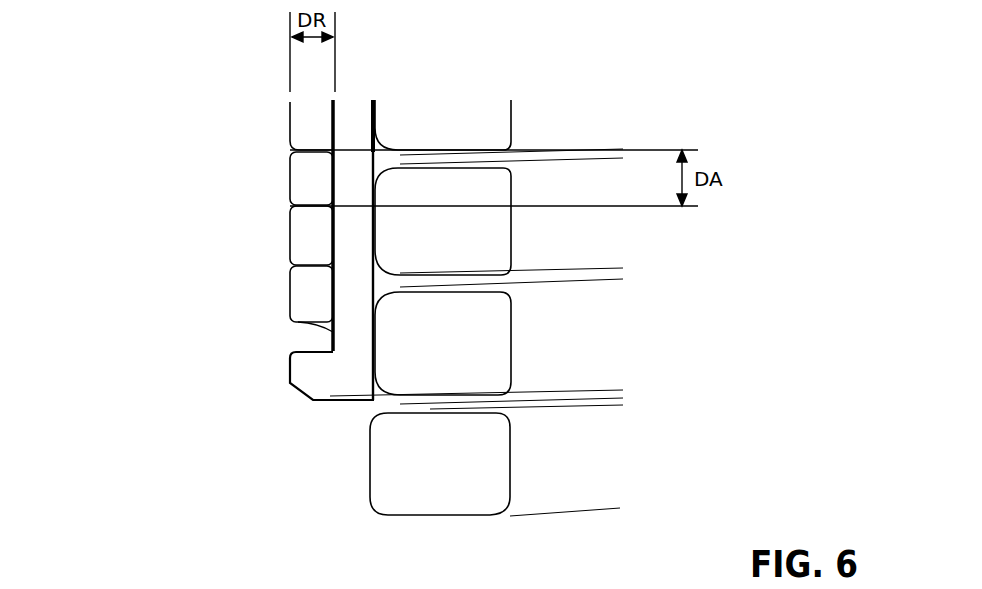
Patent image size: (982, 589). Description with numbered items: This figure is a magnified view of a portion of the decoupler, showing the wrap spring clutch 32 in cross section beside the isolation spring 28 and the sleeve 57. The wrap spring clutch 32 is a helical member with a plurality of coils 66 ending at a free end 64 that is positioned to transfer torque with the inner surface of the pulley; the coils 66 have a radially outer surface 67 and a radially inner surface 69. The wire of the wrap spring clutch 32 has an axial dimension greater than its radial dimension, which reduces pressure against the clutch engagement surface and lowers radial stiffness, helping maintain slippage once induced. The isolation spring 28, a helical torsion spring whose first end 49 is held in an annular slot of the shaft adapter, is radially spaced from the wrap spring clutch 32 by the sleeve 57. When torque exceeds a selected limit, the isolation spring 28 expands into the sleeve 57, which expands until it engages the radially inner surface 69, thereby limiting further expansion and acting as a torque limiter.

The isolation spring 28 is at (492, 341).
The wrap spring clutch 32 is at (273, 323).
The first end 49 is at (420, 497).
The sleeve 57 is at (318, 385).
The free end 64 is at (300, 289).
The coils 66 is at (303, 122).
The radially outer surface 67 is at (273, 235).
The radially inner surface 69 is at (353, 240).